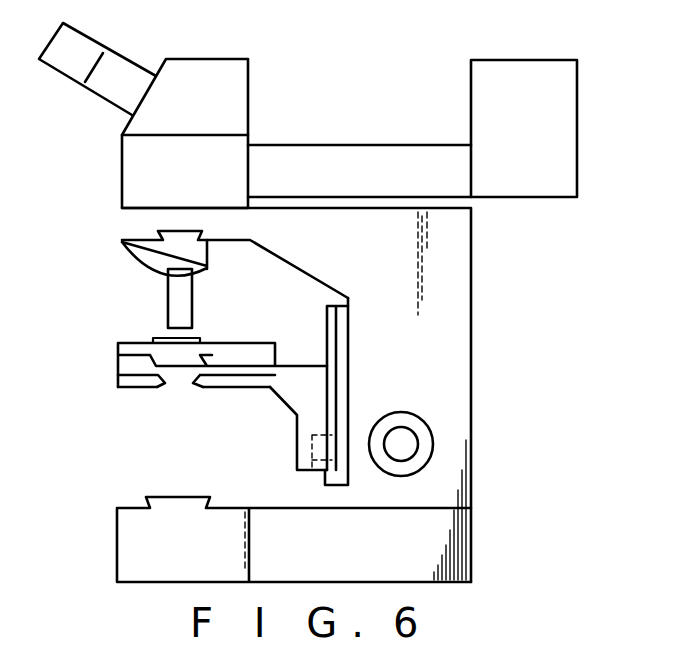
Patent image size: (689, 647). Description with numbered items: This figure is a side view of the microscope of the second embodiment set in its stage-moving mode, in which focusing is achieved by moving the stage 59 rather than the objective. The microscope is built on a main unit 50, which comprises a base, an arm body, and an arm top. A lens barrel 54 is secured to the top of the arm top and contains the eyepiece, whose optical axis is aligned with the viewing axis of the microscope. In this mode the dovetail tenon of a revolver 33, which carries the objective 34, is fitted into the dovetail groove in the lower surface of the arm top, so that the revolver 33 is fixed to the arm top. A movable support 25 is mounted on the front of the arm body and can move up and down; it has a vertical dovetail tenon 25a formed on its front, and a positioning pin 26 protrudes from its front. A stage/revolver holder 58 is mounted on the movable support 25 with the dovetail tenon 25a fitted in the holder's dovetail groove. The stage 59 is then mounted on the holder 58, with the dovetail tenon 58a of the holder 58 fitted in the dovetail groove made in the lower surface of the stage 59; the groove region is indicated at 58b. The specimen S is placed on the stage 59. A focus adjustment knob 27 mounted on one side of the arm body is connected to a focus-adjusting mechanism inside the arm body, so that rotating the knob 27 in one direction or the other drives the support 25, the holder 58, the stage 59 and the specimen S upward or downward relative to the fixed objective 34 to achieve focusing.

The main unit 50 is at (474, 288).
The lens barrel 54 is at (231, 72).
The revolver 33 is at (168, 250).
The objective 34 is at (178, 300).
The specimen S is at (157, 338).
The stage 59 is at (135, 357).
The dovetail tenon 58a is at (177, 360).
The dovetail groove 58b is at (183, 387).
The stage/revolver holder 58 is at (297, 426).
The positioning pin 26 is at (311, 470).
The dovetail tenon 25a is at (325, 337).
The movable support 25 is at (350, 338).
The focus adjustment knob 27 is at (407, 446).